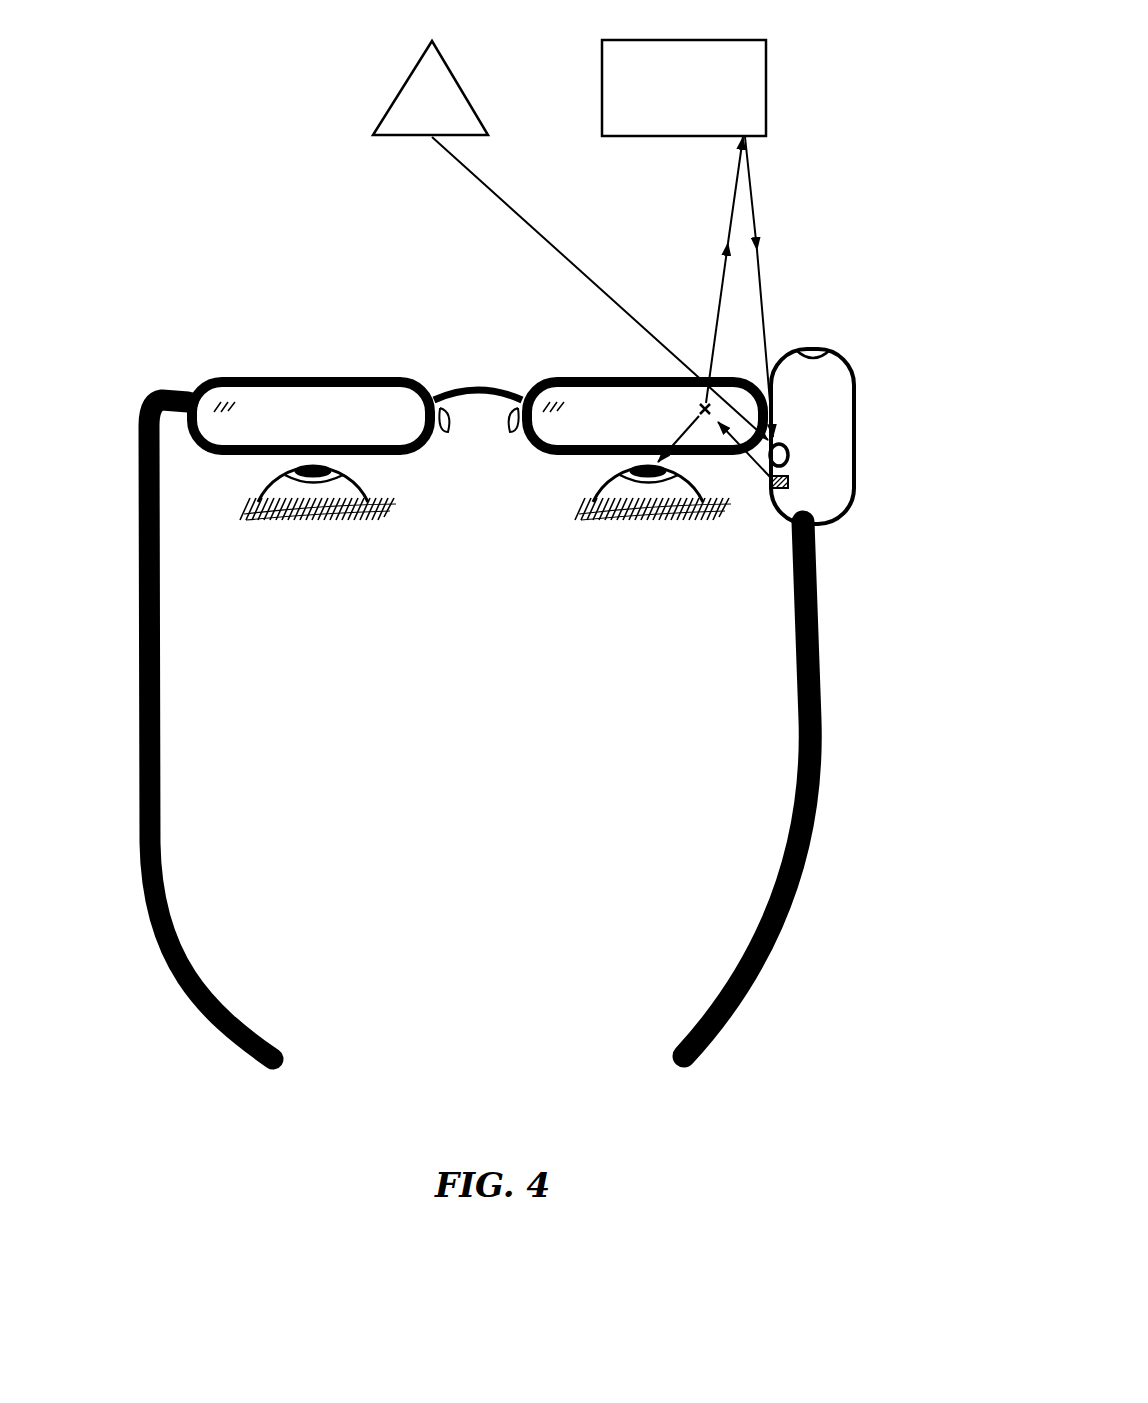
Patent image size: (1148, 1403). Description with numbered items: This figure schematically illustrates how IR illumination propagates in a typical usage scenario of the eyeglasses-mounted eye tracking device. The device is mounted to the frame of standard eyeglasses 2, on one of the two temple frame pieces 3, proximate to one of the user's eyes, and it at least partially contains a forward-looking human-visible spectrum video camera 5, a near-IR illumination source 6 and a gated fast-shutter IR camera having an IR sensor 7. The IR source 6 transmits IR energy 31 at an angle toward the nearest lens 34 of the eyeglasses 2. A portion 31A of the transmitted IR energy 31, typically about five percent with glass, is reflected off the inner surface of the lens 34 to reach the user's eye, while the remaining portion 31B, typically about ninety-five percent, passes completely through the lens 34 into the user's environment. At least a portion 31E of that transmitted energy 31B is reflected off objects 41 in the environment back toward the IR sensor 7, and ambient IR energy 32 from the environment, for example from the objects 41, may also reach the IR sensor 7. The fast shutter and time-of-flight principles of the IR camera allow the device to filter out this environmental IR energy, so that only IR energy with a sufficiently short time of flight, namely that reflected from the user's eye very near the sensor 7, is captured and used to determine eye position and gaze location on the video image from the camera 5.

The eyeglasses 2 is at (188, 354).
The temple frame piece 3 is at (816, 744).
The forward-looking human-visible spectrum video camera 5 is at (828, 347).
The near-IR illumination source 6 is at (789, 482).
The IR sensor 7 is at (790, 457).
The transmitted IR energy 31 is at (771, 478).
The portion of transmitted IR energy reflected off the lens 31A is at (676, 443).
The portion of transmitted IR energy transmitted through the lens 31B is at (718, 280).
The portion of IR energy reflected off environmental objects 31E is at (763, 290).
The ambient IR energy 32 is at (537, 232).
The lens 34 is at (264, 398).
The objects in the environment 41 is at (465, 88).